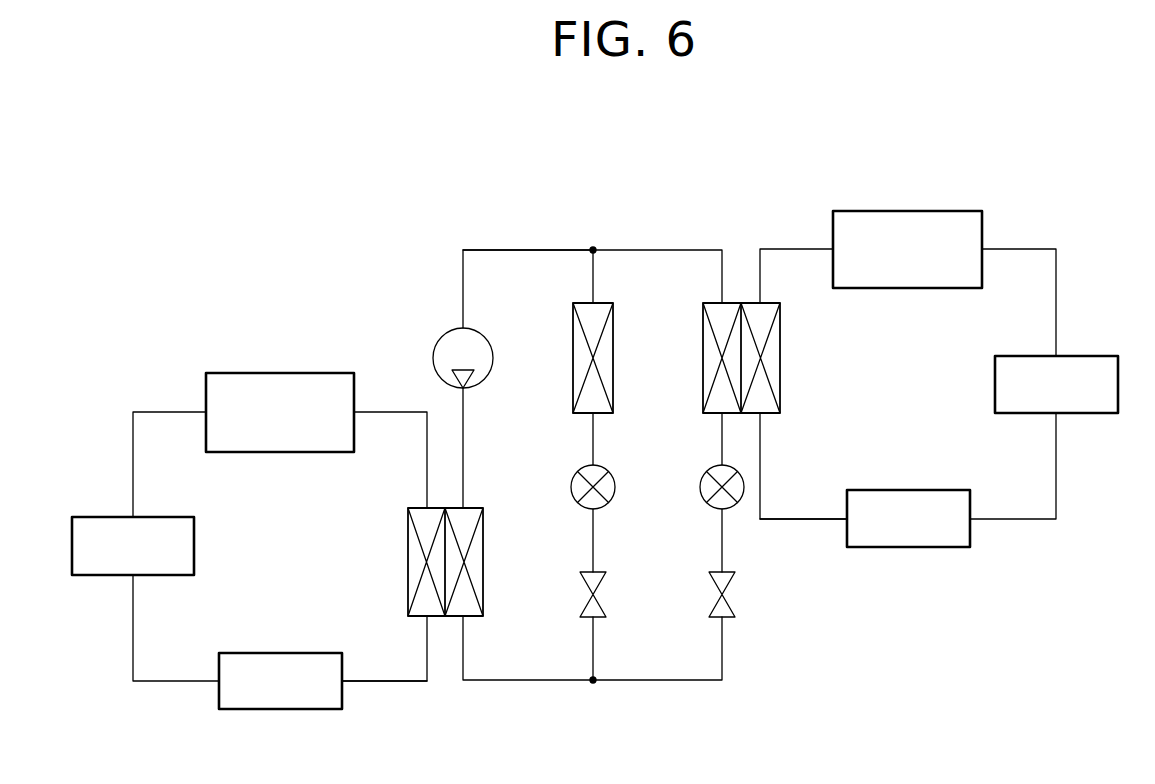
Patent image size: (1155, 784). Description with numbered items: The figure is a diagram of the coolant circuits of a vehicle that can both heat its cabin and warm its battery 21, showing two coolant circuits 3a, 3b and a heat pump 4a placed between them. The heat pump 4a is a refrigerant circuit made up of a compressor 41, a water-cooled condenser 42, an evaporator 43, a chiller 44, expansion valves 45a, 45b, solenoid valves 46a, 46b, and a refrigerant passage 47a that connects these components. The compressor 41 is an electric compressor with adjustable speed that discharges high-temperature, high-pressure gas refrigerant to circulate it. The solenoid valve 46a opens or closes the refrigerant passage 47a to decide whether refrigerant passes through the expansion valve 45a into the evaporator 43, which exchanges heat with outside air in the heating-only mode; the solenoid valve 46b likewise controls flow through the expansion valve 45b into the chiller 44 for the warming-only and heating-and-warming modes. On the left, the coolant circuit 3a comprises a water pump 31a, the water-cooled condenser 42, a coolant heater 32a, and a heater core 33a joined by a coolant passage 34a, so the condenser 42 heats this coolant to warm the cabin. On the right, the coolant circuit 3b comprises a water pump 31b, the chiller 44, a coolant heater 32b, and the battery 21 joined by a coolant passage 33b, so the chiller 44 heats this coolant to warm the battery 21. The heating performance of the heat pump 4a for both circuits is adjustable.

The coolant circuit 3a is at (240, 328).
The coolant circuit 3b is at (1002, 568).
The heat pump 4a is at (640, 215).
The battery 21 is at (1095, 356).
The water pump 31a is at (297, 653).
The water pump 31b is at (912, 490).
The coolant heater 32a is at (315, 373).
The coolant heater 32b is at (925, 211).
The heater core 33a is at (194, 548).
The coolant passage 33b is at (797, 519).
The coolant passage 34a is at (384, 681).
The compressor 41 is at (446, 336).
The water-cooled condenser 42 is at (483, 538).
The evaporator 43 is at (573, 337).
The chiller 44 is at (703, 337).
The expansion valve 45a is at (572, 482).
The expansion valve 45b is at (701, 482).
The solenoid valve 46a is at (583, 580).
The solenoid valve 46b is at (712, 580).
The refrigerant passage 47a is at (523, 250).